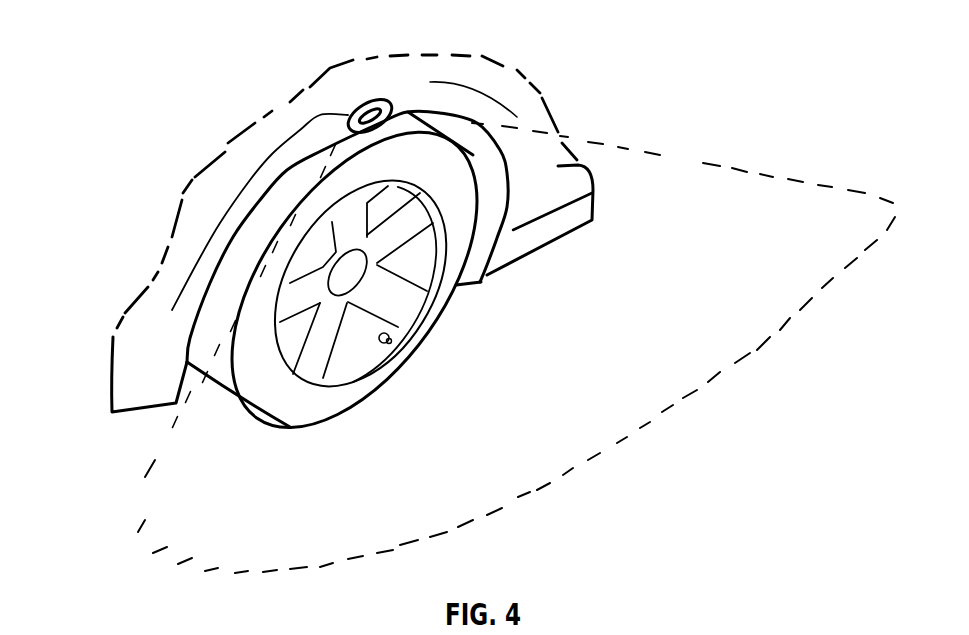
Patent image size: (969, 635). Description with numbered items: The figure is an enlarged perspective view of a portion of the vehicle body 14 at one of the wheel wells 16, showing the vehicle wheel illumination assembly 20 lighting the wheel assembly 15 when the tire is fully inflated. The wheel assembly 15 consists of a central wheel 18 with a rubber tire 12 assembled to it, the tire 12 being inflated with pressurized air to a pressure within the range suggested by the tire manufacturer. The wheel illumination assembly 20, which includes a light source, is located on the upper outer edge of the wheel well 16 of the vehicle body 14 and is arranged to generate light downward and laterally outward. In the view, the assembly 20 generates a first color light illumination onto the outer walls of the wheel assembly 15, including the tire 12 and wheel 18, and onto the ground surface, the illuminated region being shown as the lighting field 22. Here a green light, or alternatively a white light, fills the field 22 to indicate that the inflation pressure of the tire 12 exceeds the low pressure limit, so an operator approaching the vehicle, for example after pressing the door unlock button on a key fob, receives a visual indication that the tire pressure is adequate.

The tire 12 is at (433, 300).
The vehicle body 14 is at (582, 162).
The wheel assembly 15 is at (228, 420).
The wheel well 16 is at (463, 108).
The wheel 18 is at (325, 337).
The vehicle wheel illumination assembly 20 is at (340, 120).
The lighting field 22 is at (163, 451).
The ground G is at (140, 492).